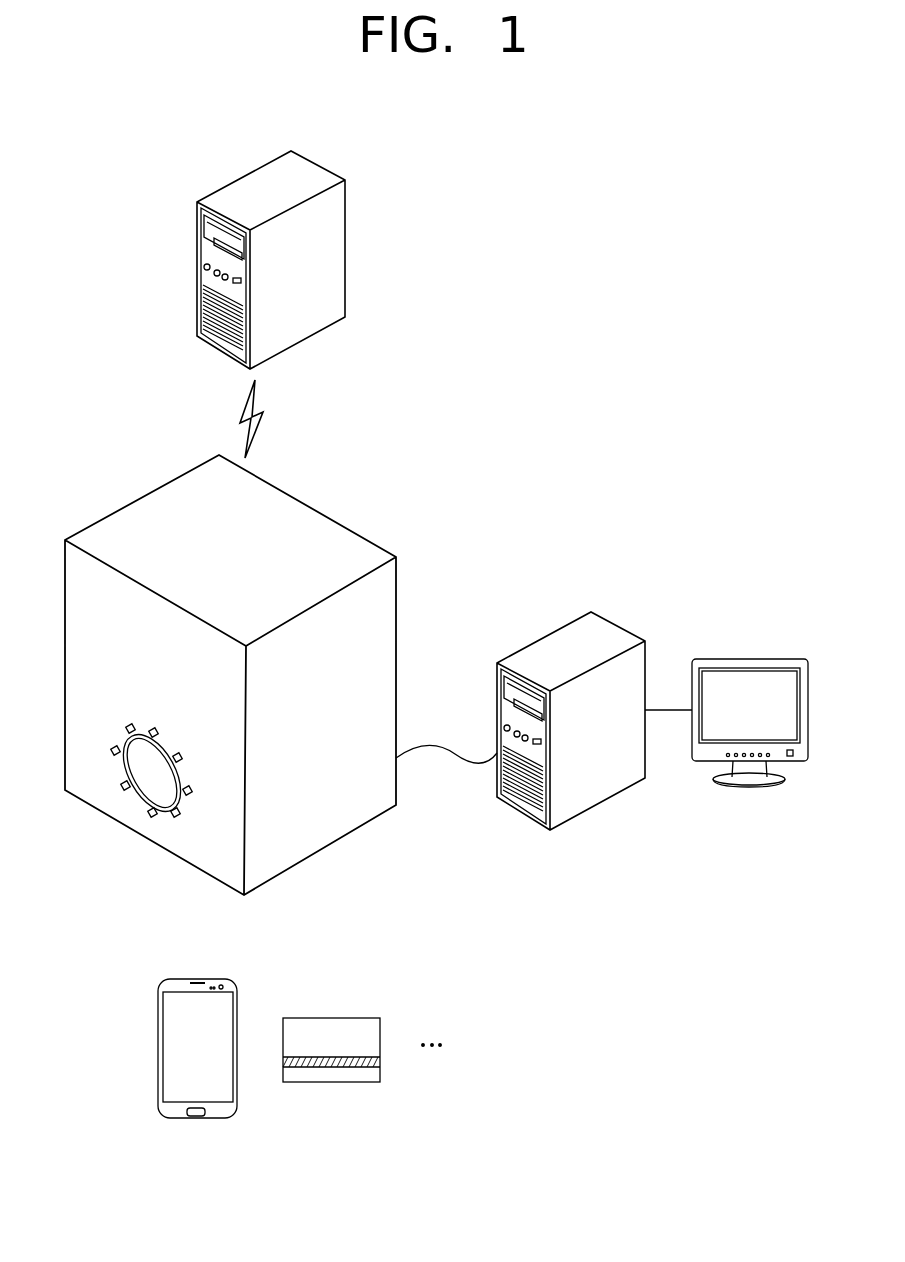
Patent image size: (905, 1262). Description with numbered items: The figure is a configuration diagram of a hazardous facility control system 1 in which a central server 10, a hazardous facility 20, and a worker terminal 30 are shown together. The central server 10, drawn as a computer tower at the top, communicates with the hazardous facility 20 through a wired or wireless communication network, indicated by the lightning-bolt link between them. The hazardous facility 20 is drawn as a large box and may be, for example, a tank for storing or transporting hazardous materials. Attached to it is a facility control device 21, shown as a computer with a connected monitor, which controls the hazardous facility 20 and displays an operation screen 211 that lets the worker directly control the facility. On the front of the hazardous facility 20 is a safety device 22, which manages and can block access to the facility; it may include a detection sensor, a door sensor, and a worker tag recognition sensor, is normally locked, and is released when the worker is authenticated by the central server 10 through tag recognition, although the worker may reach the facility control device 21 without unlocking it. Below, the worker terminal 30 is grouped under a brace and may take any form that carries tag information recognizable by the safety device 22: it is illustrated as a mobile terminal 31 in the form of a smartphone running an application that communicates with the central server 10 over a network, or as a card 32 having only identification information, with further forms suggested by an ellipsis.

The hazardous facility control system 1 is at (665, 345).
The central server 10 is at (346, 240).
The hazardous facility 20 is at (318, 518).
The facility control device 21 is at (563, 627).
The operation screen 211 is at (767, 659).
The safety device 22 is at (150, 782).
The worker terminal 30 is at (331, 1064).
The mobile terminal 31 is at (237, 1003).
The card 32 is at (362, 1018).